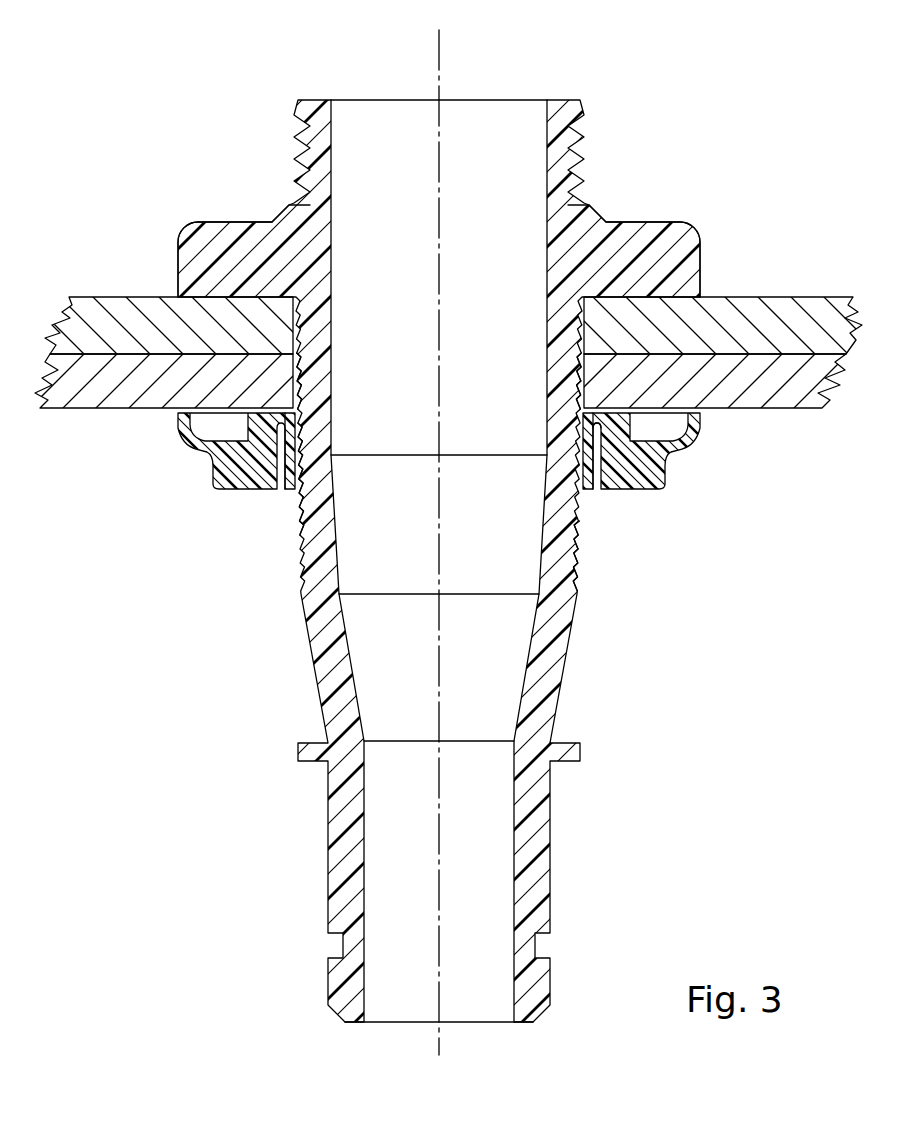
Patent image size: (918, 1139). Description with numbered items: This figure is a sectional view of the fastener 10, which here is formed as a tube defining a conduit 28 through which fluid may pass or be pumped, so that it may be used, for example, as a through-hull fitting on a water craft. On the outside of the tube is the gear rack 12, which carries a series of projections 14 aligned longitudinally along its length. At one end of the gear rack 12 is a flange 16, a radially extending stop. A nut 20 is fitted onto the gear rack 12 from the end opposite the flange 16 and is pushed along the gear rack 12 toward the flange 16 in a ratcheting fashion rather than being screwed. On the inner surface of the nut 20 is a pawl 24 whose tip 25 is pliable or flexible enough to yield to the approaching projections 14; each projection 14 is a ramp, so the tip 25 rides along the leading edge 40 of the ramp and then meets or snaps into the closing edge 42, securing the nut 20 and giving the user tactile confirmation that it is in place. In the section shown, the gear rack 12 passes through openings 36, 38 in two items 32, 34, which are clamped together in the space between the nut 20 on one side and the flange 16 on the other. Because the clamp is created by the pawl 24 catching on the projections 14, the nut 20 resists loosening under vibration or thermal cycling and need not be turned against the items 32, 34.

The fastener 10 is at (488, 63).
The gear rack 12 is at (298, 568).
The projections 14 is at (297, 524).
The flange 16 is at (651, 236).
The nut 20 is at (697, 446).
The pawl 24 is at (291, 462).
The tip 25 is at (582, 458).
The conduit 28 is at (407, 1005).
The item 32 is at (772, 410).
The item 34 is at (762, 300).
The opening 36 is at (299, 312).
The opening 38 is at (299, 382).
The leading edge 40 is at (580, 551).
The closing edge 42 is at (582, 542).